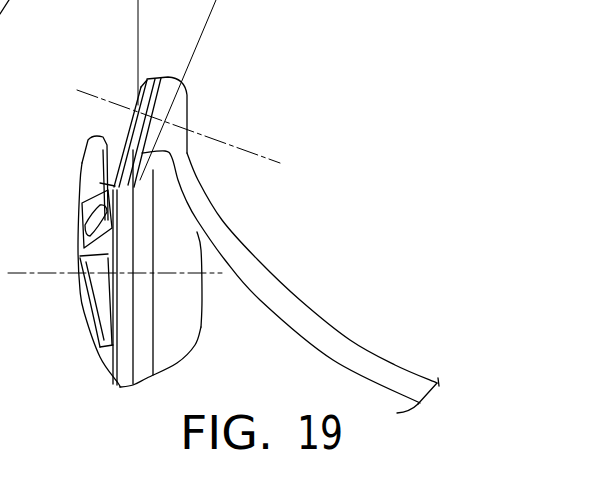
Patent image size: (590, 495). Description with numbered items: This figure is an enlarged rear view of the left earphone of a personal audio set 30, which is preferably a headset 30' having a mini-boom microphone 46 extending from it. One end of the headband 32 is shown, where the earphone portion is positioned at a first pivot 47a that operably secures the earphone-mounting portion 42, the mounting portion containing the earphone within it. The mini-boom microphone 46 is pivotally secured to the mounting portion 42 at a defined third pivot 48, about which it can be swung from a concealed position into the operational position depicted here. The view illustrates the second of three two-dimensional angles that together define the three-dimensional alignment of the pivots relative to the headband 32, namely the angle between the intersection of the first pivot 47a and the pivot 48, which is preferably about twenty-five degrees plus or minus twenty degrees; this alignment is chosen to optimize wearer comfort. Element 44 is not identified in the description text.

The personal audio set 30 is at (293, 231).
The headset 30' is at (169, 274).
The headband 32 is at (334, 330).
The earphone-mounting portion 42 is at (133, 120).
The blade strip 44 is at (170, 140).
The mini-boom microphone 46 is at (80, 183).
The first pivot 47a is at (212, 132).
The third pivot 48 is at (56, 275).